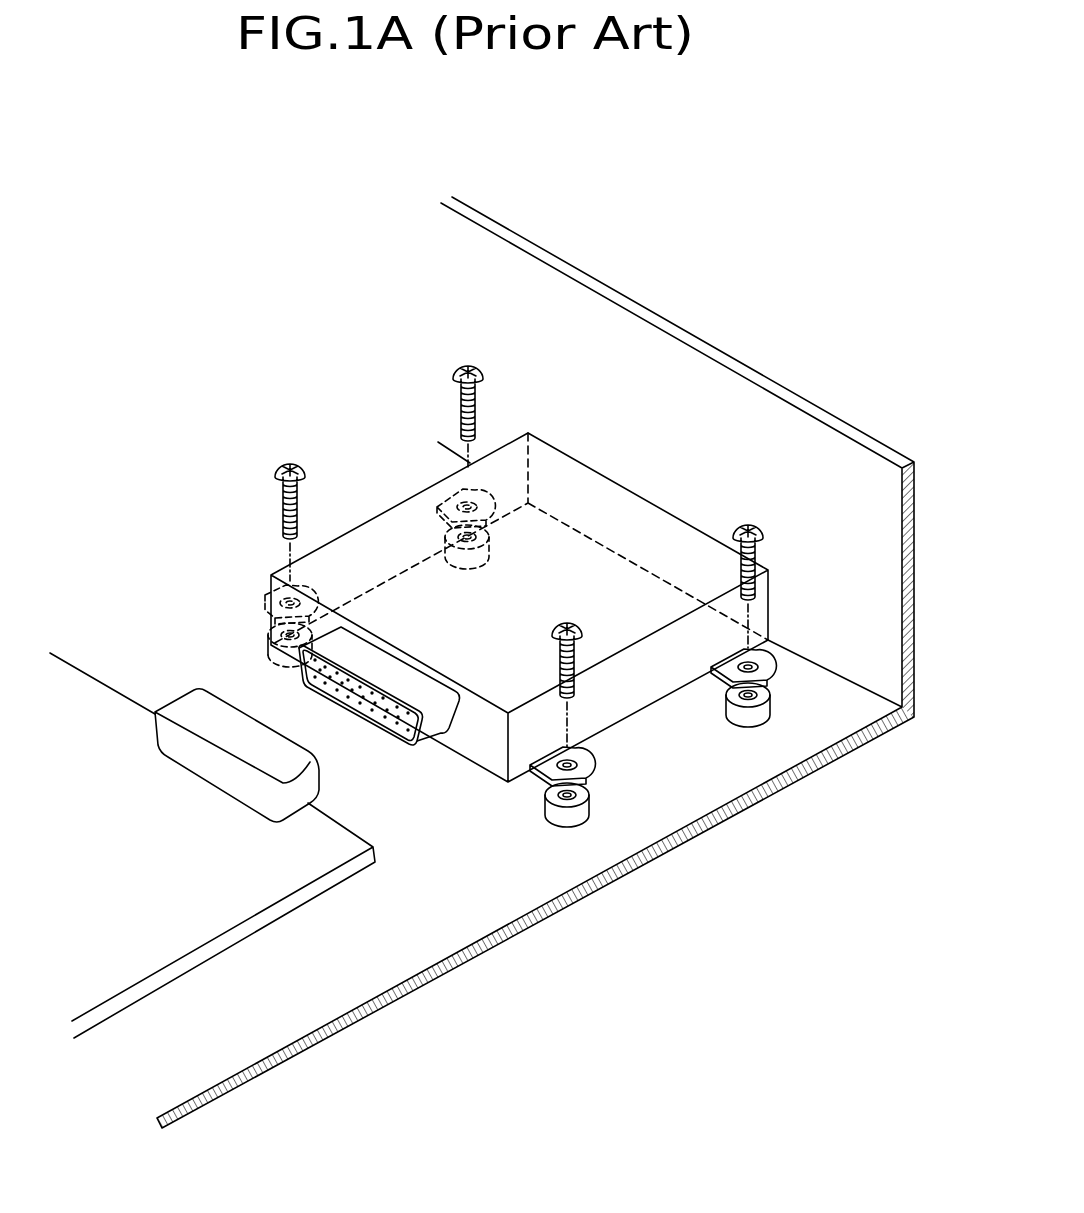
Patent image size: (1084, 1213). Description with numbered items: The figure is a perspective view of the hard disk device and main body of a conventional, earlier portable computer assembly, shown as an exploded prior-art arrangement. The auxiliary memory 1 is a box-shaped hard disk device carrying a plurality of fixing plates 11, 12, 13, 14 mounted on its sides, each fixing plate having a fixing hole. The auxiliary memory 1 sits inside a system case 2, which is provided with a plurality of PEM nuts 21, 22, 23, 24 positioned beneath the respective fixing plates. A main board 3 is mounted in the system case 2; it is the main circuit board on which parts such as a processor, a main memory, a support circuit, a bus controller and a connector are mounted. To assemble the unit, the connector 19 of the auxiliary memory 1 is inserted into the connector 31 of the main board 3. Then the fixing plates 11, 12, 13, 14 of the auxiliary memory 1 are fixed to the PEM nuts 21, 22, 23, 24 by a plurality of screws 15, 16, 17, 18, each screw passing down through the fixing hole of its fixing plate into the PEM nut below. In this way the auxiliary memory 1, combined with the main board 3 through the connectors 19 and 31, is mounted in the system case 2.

The auxiliary memory 1 is at (378, 492).
The system case 2 is at (500, 893).
The main board 3 is at (213, 915).
The fixing plate 11 is at (582, 767).
The fixing plate 12 is at (762, 670).
The fixing plate 13 is at (266, 605).
The fixing plate 14 is at (450, 500).
The screw 15 is at (582, 632).
The screw 16 is at (762, 528).
The screw 17 is at (283, 465).
The screw 18 is at (460, 367).
The connector 19 is at (427, 727).
The PEM nut 21 is at (757, 713).
The PEM nut 22 is at (577, 813).
The PEM nut 23 is at (270, 655).
The PEM nut 24 is at (450, 560).
The connector 31 is at (183, 703).